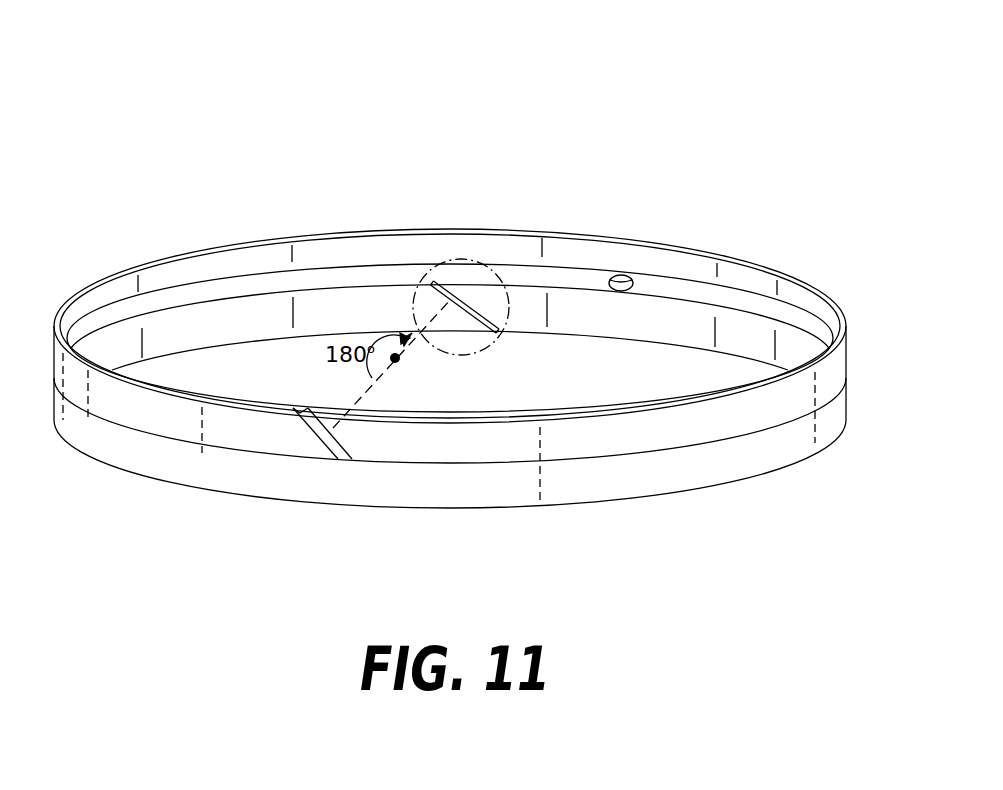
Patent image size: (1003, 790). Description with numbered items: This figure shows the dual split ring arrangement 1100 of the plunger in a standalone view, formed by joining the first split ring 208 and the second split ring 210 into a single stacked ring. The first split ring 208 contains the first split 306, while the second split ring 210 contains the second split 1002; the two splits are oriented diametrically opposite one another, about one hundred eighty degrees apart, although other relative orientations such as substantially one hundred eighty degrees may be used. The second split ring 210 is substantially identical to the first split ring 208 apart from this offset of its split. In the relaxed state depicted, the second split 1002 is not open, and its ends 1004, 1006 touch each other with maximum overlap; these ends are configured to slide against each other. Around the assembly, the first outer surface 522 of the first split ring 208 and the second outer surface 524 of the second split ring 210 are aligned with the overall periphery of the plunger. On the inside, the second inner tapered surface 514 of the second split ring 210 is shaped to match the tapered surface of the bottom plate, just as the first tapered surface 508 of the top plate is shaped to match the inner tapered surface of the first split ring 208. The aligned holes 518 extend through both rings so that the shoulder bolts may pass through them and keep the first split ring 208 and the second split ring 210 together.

The dual split ring arrangement 1100 is at (868, 101).
The first split ring 208 is at (841, 362).
The second split ring 210 is at (828, 431).
The second inner tapered surface 514 is at (244, 334).
The first outer surface 522 is at (477, 456).
The second outer surface 524 is at (459, 499).
The first tapered surface 508 is at (446, 247).
The second split 1002 is at (502, 276).
The end of second split 1004 is at (472, 330).
The end of second split 1006 is at (472, 330).
The aligned holes 518 is at (633, 283).
The first split 306 is at (303, 430).